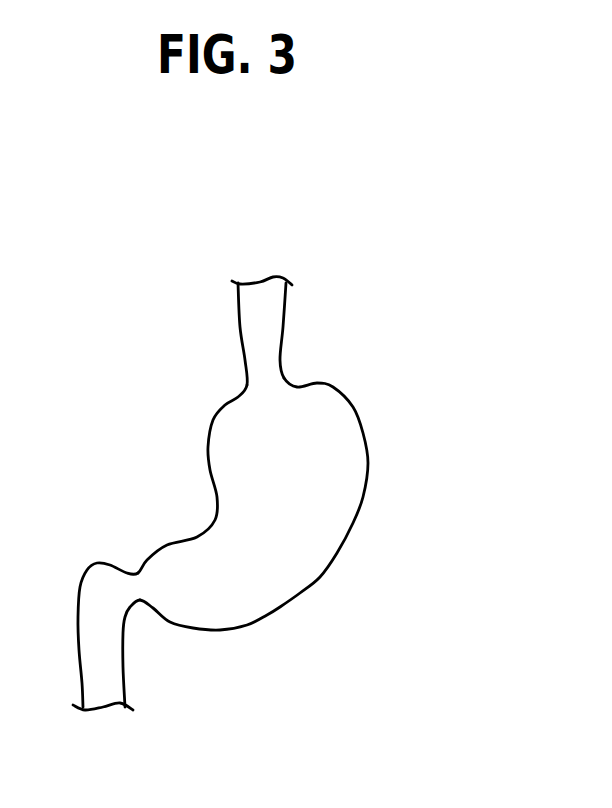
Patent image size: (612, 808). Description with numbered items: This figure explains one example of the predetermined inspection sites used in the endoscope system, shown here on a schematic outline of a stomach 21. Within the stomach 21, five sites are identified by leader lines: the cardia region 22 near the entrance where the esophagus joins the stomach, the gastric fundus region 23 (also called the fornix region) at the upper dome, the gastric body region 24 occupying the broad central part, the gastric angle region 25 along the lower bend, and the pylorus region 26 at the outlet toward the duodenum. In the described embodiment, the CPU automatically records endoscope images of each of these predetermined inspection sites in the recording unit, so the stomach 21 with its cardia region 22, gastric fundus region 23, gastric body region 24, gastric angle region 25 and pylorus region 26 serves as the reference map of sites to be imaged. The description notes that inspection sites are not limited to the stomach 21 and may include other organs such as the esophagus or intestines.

The stomach 21 is at (358, 626).
The cardia region 22 is at (263, 385).
The gastric fundus region 23 is at (327, 395).
The gastric body region 24 is at (327, 470).
The gastric angle region 25 is at (257, 558).
The pylorus region 26 is at (138, 590).